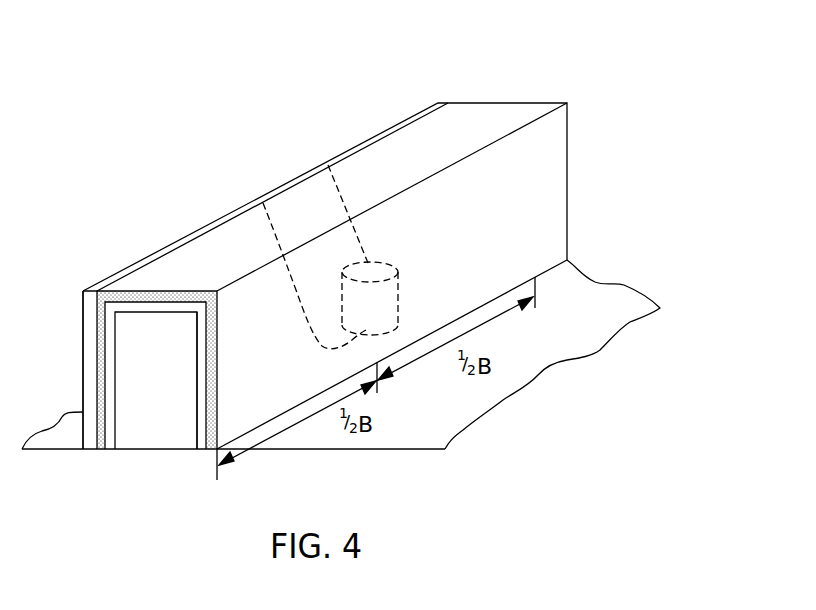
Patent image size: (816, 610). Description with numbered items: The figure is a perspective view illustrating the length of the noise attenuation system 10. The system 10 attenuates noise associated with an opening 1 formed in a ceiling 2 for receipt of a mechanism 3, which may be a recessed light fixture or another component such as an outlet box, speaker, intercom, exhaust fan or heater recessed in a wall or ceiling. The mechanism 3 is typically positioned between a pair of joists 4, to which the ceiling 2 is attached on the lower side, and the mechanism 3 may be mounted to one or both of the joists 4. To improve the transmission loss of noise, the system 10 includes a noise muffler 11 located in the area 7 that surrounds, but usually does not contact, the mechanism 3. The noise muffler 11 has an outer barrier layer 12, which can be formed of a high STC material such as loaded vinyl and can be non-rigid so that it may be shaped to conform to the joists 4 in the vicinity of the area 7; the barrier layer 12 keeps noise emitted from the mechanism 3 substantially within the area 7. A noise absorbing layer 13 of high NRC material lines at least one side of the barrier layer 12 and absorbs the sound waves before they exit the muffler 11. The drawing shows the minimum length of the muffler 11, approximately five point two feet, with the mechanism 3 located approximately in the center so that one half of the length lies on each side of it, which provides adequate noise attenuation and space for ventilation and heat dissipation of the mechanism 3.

The opening 1 is at (263, 203).
The ceiling 2 is at (577, 347).
The mechanism 3 is at (328, 165).
The joists 4 is at (86, 362).
The area 7 is at (143, 423).
The system for attenuating noise 10 is at (577, 108).
The noise muffler 11 is at (490, 115).
The outer barrier layer 12 is at (138, 297).
The noise absorbing layer 13 is at (204, 420).